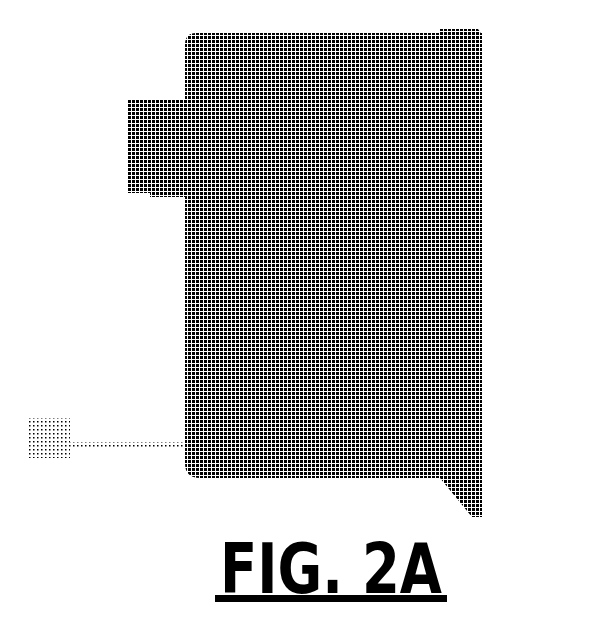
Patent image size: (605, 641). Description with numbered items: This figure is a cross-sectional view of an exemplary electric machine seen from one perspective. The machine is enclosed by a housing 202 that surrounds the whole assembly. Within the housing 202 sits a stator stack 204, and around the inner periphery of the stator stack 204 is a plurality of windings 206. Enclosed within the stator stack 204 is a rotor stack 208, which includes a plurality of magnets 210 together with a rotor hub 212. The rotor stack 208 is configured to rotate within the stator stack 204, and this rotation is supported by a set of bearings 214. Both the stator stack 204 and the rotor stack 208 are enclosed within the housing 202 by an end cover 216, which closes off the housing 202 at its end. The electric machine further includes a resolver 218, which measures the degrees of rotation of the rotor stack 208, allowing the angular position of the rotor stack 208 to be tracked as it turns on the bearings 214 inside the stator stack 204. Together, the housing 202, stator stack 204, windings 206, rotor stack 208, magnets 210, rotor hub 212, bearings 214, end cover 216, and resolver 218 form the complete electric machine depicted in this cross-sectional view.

The housing 202 is at (448, 488).
The stator stack 204 is at (482, 40).
The windings 206 is at (482, 78).
The end cover 216 is at (482, 126).
The magnets 210 is at (482, 160).
The bearings 214 is at (482, 213).
The rotor hub 212 is at (482, 297).
The rotor stack 208 is at (484, 405).
The resolver 218 is at (483, 450).